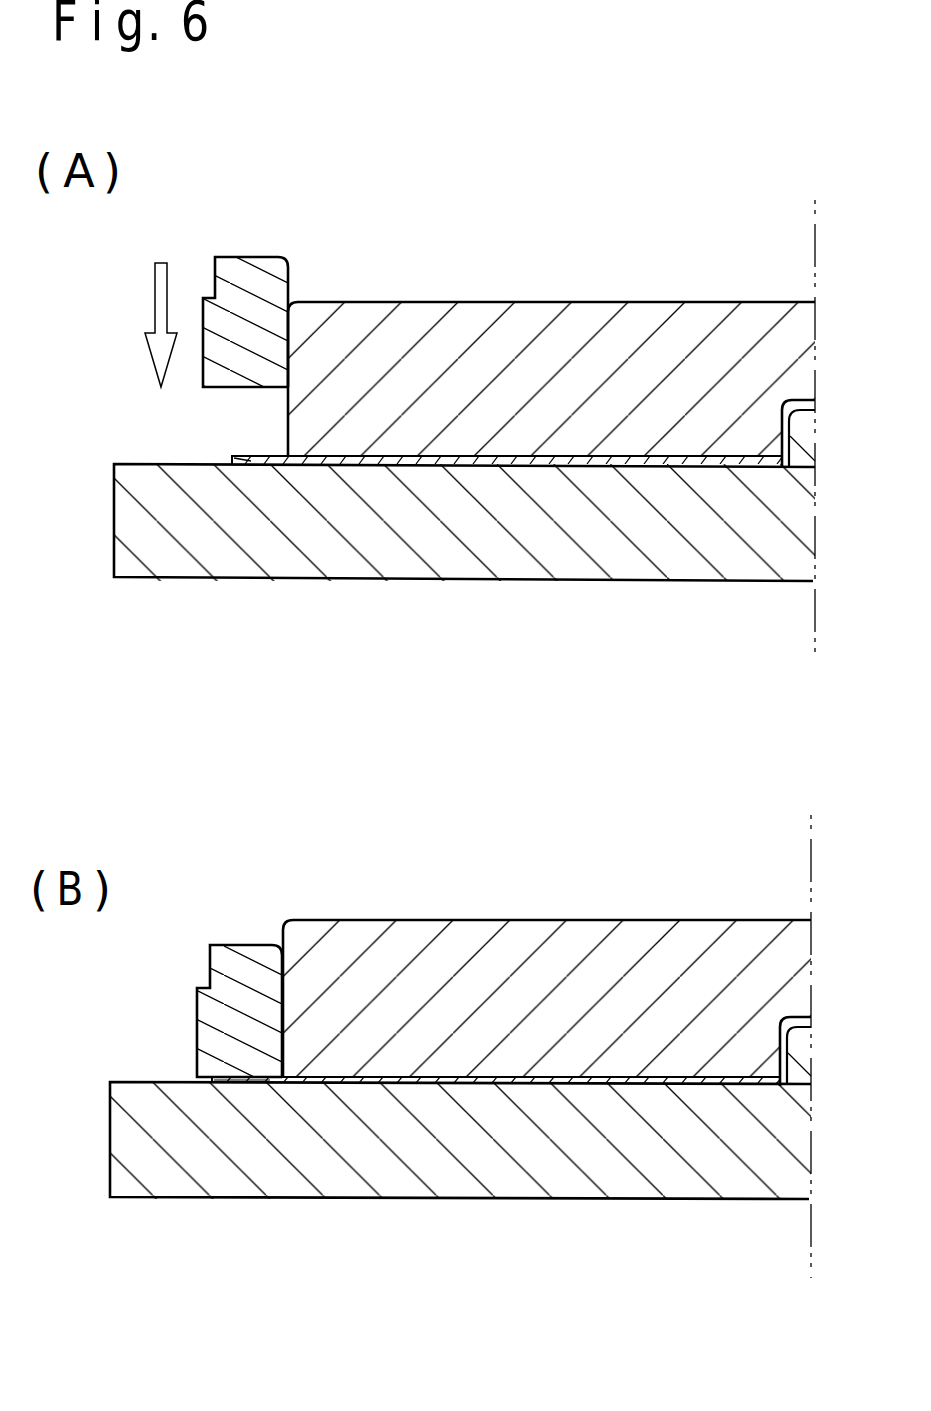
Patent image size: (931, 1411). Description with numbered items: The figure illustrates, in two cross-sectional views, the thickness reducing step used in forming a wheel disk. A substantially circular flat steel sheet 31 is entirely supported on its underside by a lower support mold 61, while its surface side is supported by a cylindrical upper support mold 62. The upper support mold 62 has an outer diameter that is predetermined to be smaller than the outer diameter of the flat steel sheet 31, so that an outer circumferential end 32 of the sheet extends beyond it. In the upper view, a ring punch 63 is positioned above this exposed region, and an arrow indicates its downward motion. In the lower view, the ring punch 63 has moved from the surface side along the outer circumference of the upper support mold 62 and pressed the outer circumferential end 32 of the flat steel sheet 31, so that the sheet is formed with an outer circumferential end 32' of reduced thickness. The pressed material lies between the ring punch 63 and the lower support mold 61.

The flat steel sheet 31 is at (405, 461).
The outer circumferential end 32 is at (148, 434).
The outer circumferential end of reduced thickness 32' is at (211, 1185).
The lower support mold 61 is at (548, 555).
The upper support mold 62 is at (607, 350).
The ring punch 63 is at (268, 377).